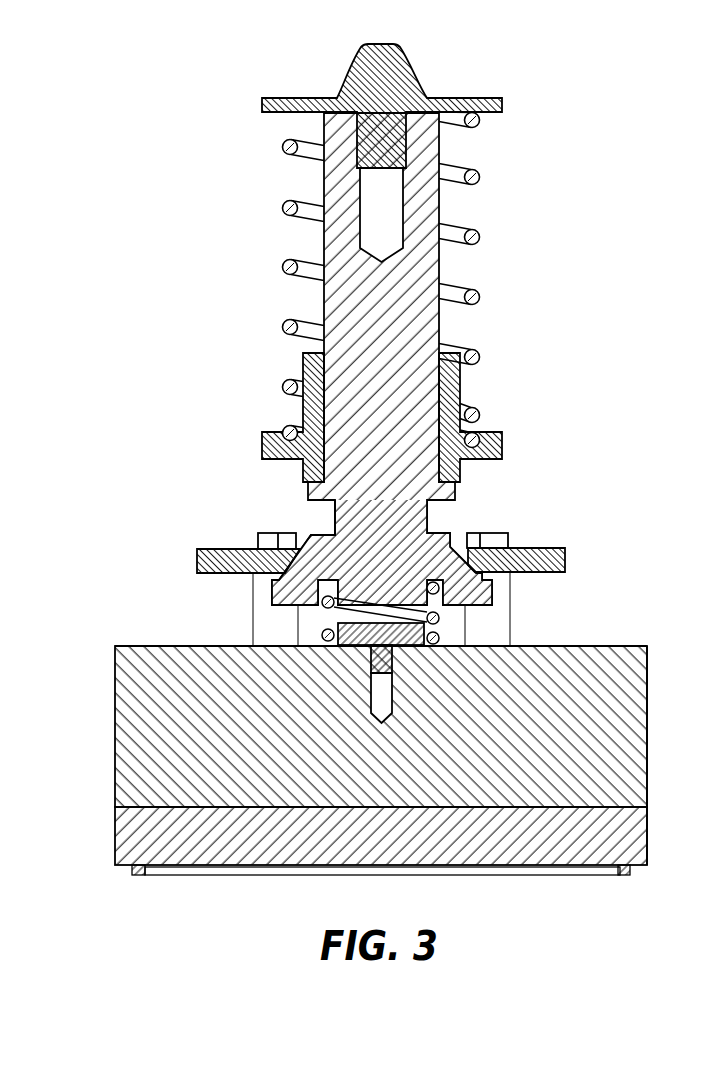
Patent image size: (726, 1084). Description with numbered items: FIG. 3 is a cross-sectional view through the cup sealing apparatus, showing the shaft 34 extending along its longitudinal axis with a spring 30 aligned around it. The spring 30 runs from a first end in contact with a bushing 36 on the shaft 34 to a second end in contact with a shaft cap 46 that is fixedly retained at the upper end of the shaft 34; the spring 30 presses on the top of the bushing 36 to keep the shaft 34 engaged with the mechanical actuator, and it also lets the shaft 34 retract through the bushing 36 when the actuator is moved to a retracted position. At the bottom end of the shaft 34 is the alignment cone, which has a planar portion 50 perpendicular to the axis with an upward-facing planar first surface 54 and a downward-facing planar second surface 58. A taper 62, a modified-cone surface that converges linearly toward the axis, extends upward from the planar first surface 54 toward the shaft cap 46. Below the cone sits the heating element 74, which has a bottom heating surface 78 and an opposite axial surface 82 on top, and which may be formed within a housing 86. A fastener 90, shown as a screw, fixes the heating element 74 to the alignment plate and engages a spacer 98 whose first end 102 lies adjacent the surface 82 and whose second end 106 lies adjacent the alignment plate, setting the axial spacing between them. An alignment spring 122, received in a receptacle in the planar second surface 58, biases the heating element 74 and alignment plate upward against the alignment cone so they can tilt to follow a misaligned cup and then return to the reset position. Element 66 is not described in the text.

The spring 30 is at (478, 170).
The shaft 34 is at (422, 267).
The bushing 36 is at (490, 455).
The shaft cap 46 is at (502, 103).
The planar portion 50 is at (272, 588).
The planar first surface 54 is at (280, 565).
The planar second surface 58 is at (292, 603).
The taper 62 is at (303, 533).
The plate 66 is at (480, 558).
The heating element 74 is at (643, 675).
The heating surface 78 is at (643, 853).
The opposite axial surface 82 is at (604, 647).
The housing 86 is at (682, 748).
The fastener 90 is at (268, 533).
The spacer 98 is at (492, 632).
The first end 102 is at (524, 631).
The second end 106 is at (520, 584).
The alignment spring 122 is at (326, 643).